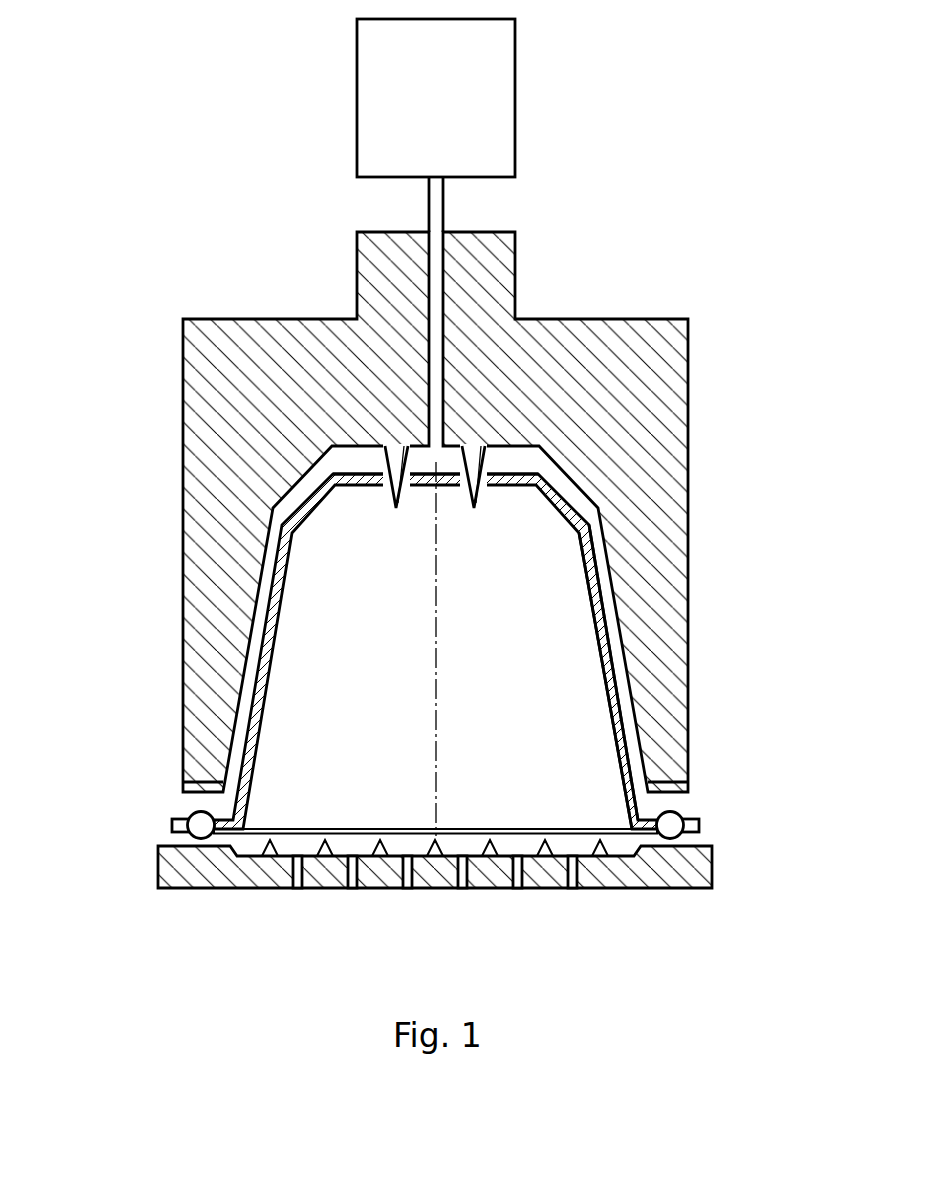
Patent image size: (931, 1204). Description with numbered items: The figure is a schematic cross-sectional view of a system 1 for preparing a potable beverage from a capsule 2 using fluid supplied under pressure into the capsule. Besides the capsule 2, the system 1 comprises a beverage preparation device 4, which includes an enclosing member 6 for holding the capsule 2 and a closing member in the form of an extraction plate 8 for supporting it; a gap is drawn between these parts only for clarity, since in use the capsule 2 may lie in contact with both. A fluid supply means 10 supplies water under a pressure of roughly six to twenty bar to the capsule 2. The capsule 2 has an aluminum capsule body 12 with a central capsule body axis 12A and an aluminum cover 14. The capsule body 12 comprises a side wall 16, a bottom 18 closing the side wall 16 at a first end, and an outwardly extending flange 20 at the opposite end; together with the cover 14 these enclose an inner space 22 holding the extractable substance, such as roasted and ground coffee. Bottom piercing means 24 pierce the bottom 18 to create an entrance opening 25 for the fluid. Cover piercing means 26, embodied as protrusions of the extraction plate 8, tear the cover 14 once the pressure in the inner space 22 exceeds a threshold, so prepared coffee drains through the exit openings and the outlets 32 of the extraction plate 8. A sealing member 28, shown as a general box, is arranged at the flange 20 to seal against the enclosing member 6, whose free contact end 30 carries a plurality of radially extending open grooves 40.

The system 1 is at (704, 478).
The capsule 2 is at (595, 585).
The beverage preparation device 4 is at (706, 587).
The enclosing member 6 is at (688, 637).
The closing member 8 is at (645, 888).
The fluid supply means 10 is at (422, 112).
The capsule body 12 is at (626, 758).
The central capsule body axis 12A is at (433, 680).
The cover 14 is at (520, 834).
The side wall 16 is at (617, 707).
The bottom 18 is at (508, 479).
The outwardly extending flange 20 is at (690, 825).
The inner space 22 is at (362, 740).
The bottom piercing means 24 is at (476, 460).
The entrance opening 25 is at (484, 492).
The cover piercing means 26 is at (379, 845).
The sealing member 28 is at (199, 826).
The free contact end 30 is at (201, 792).
The outlets 32 is at (461, 893).
The open grooves 40 is at (203, 787).